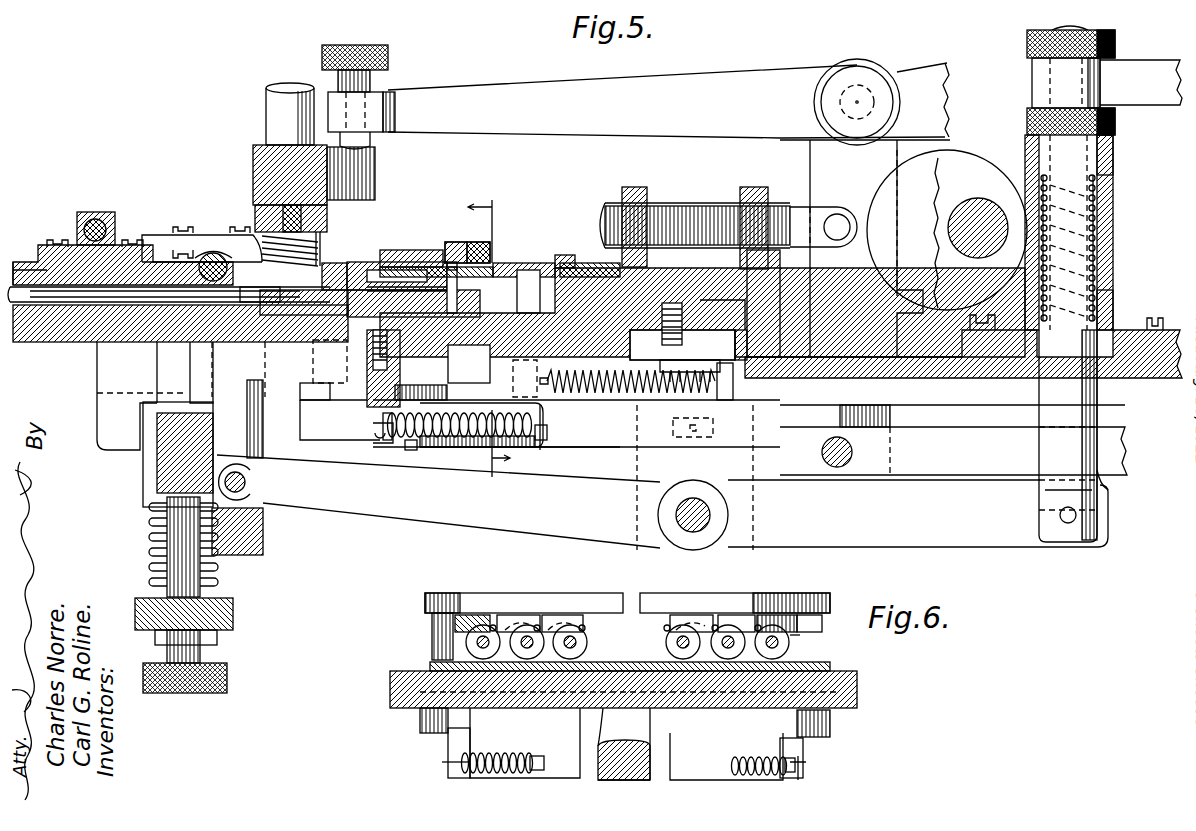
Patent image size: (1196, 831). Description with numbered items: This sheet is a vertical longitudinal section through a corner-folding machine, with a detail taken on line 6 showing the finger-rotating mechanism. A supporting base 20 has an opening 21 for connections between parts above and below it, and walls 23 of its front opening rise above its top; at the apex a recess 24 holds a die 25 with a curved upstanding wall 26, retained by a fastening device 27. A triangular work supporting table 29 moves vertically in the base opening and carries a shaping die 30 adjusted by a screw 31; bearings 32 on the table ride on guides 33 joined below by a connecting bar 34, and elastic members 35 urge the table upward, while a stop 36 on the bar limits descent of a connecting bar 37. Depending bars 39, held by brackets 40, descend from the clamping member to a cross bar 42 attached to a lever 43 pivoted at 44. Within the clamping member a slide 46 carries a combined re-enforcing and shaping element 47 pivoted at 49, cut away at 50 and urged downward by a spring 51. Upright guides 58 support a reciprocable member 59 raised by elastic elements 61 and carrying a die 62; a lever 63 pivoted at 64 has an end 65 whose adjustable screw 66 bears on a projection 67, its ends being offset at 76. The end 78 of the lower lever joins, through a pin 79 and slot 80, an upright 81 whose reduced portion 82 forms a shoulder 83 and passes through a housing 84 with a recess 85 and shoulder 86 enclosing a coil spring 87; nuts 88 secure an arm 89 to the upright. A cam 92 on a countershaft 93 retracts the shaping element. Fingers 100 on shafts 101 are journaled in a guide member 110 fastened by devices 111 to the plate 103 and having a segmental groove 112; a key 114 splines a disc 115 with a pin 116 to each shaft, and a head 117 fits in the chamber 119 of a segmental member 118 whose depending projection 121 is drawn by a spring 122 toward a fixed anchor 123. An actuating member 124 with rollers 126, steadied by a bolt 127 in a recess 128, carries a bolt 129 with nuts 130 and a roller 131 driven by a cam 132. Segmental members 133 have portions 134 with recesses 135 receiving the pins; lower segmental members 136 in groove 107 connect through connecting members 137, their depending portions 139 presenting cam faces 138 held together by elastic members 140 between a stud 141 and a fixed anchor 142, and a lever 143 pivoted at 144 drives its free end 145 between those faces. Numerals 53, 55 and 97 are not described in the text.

In FIG. 5, the section line 6— 6 is at (489, 335).
In FIG. 5, the supporting base 20 is at (928, 362).
In FIG. 5, the opening 21 is at (650, 408).
In FIG. 5, the walls 23 is at (335, 398).
In FIG. 5, the recess 24 is at (345, 405).
In FIG. 5, the die 25 is at (378, 440).
In FIG. 5, the curved upstanding wall 26 is at (330, 361).
In FIG. 5, the fastening device 27 is at (373, 365).
In FIG. 5, the work supporting table 29 is at (93, 343).
In FIG. 5, the shaping die 30 is at (295, 342).
In FIG. 5, the adjusting device or screw 31 is at (12, 305).
In FIG. 5, the bearings 32 is at (114, 435).
In FIG. 5, the guides 33 is at (153, 540).
In FIG. 5, the connecting bar 34 is at (233, 618).
In FIG. 5, the elastic member 35 is at (150, 525).
In FIG. 5, the stop 36 is at (200, 660).
In FIG. 5, the connecting bar 37 is at (165, 470).
In FIG. 5, the depending bars 39 is at (255, 455).
In FIG. 5, the brackets 40 is at (200, 240).
In FIG. 5, the cross bar 42 is at (263, 552).
In FIG. 5, the lever 43 is at (464, 519).
In FIG. 5, the pivot 44 is at (658, 548).
In FIG. 5, the slide 46 is at (25, 262).
In FIG. 5, the combined re-enforcing and shaping element 47 is at (165, 283).
In FIG. 5, the pivot 49 is at (205, 262).
In FIG. 5, the cut away portion 50 is at (260, 285).
In FIG. 5, the spring 51 is at (213, 253).
In FIG. 5, the table step 53 is at (118, 240).
In FIG. 5, the stop block 55 is at (95, 212).
In FIG. 5, the upright guides 58 is at (275, 98).
In FIG. 5, the reciprocable member 59 is at (253, 163).
In FIG. 5, the elastic elements 61 is at (262, 250).
In FIG. 5, the die 62 is at (255, 212).
In FIG. 5, the lever 63 is at (937, 78).
In FIG. 5, the pivot 64 is at (857, 86).
In FIG. 5, the end of lever 65 is at (392, 104).
In FIG. 5, the adjustable screw or bolt 66 is at (362, 47).
In FIG. 5, the projection 67 is at (376, 180).
In FIG. 5, the offset 76 is at (884, 70).
In FIG. 5, the end of lever 78 is at (1108, 530).
In FIG. 5, the pin 79 is at (1068, 525).
In FIG. 5, the slot 80 is at (1050, 525).
In FIG. 5, the upright 81 is at (1108, 485).
In FIG. 5, the reduced upper portion 82 is at (1100, 240).
In FIG. 5, the shoulder 83 is at (1068, 338).
In FIG. 5, the bearing or housing 84 is at (1113, 212).
In FIG. 5, the enlarged recess 85 is at (1100, 197).
In FIG. 5, the shoulder 86 is at (1113, 165).
In FIG. 5, the coil spring 87 is at (1110, 300).
In FIG. 5, the adjustable nuts or collars 88 is at (1027, 48).
In FIG. 5, the arm 89 is at (1140, 68).
In FIG. 5, the cam 92 is at (947, 230).
In FIG. 5, the countershaft 93 is at (977, 200).
In FIG. 5, the plate 97 is at (35, 262).
In FIG. 5, the fingers 100 is at (360, 262).
In FIG. 5, the shafts 101 is at (385, 290).
In FIG. 6, the shafts 101 is at (525, 660).
In FIG. 5, the plate 103 is at (593, 340).
In FIG. 6, the plate 103 is at (857, 692).
In FIG. 5, the groove 107 is at (478, 448).
In FIG. 6, the groove 107 is at (490, 760).
In FIG. 5, the guide member 110 is at (485, 267).
In FIG. 6, the guide member 110 is at (433, 667).
In FIG. 5, the fastening devices 111 is at (412, 290).
In FIG. 5, the segmental groove 112 is at (493, 262).
In FIG. 6, the segmental groove 112 is at (432, 645).
In FIG. 6, the key or feather 114 is at (795, 650).
In FIG. 5, the disc 115 is at (433, 267).
In FIG. 6, the disc 115 is at (587, 645).
In FIG. 5, the lug or pin 116 is at (450, 262).
In FIG. 6, the lug or pin 116 is at (585, 628).
In FIG. 5, the disc or head 117 is at (527, 263).
In FIG. 5, the segmental shaped member 118 is at (575, 266).
In FIG. 5, the chamber 119 is at (553, 263).
In FIG. 5, the depending projection 121 is at (627, 374).
In FIG. 5, the spring 122 is at (615, 388).
In FIG. 5, the fixed anchor 123 is at (745, 355).
In FIG. 5, the actuating member 124 is at (735, 300).
In FIG. 5, the anti-friction rollers 126 is at (735, 320).
In FIG. 5, the fastening bolt 127 is at (725, 285).
In FIG. 5, the recess 128 is at (747, 338).
In FIG. 5, the bolt 129 is at (782, 210).
In FIG. 5, the nuts or collars 130 is at (640, 187).
In FIG. 5, the anti-friction roller 131 is at (840, 214).
In FIG. 5, the cam 132 is at (885, 205).
In FIG. 5, the segmental shaped members 133 is at (458, 242).
In FIG. 6, the segmental shaped members 133 is at (518, 607).
In FIG. 6, the portions 134 is at (555, 610).
In FIG. 5, the downwardly opening recesses 135 is at (480, 242).
In FIG. 6, the downwardly opening recesses 135 is at (498, 610).
In FIG. 5, the segmental shaped members 136 is at (413, 463).
In FIG. 6, the segmental shaped members 136 is at (442, 764).
In FIG. 5, the connecting member 137 is at (298, 405).
In FIG. 6, the connecting member 137 is at (448, 740).
In FIG. 5, the cam face or surface 138 is at (537, 450).
In FIG. 6, the cam face or surface 138 is at (598, 750).
In FIG. 5, the depending portions 139 is at (469, 364).
In FIG. 6, the depending portions 139 is at (598, 770).
In FIG. 5, the elastic members 140 is at (410, 438).
In FIG. 6, the elastic members 140 is at (545, 760).
In FIG. 5, the stud 141 is at (392, 440).
In FIG. 6, the stud 141 is at (420, 722).
In FIG. 5, the fixed anchor 142 is at (547, 434).
In FIG. 5, the lever 143 is at (940, 445).
In FIG. 5, the pivot 144 is at (843, 467).
In FIG. 5, the free end 145 is at (517, 440).
In FIG. 6, the free end 145 is at (652, 774).